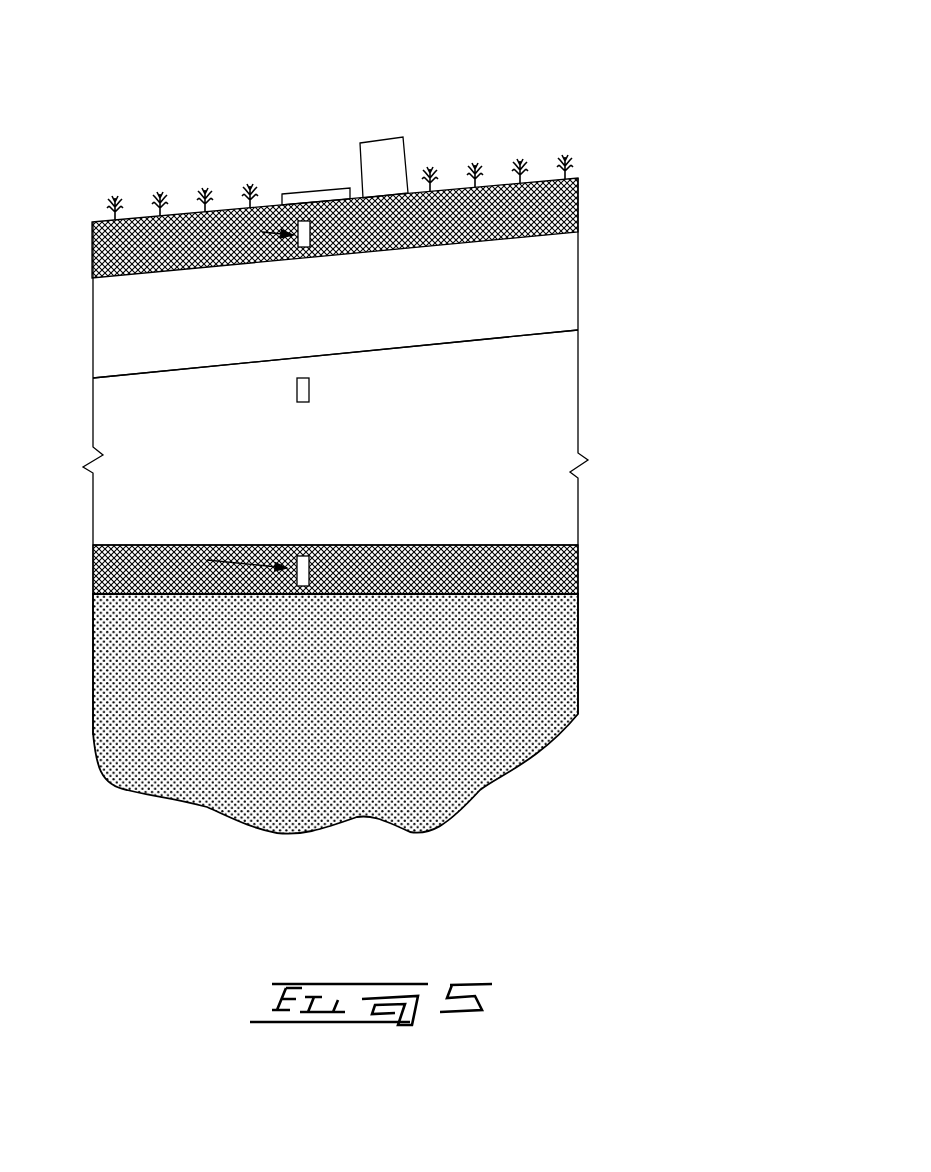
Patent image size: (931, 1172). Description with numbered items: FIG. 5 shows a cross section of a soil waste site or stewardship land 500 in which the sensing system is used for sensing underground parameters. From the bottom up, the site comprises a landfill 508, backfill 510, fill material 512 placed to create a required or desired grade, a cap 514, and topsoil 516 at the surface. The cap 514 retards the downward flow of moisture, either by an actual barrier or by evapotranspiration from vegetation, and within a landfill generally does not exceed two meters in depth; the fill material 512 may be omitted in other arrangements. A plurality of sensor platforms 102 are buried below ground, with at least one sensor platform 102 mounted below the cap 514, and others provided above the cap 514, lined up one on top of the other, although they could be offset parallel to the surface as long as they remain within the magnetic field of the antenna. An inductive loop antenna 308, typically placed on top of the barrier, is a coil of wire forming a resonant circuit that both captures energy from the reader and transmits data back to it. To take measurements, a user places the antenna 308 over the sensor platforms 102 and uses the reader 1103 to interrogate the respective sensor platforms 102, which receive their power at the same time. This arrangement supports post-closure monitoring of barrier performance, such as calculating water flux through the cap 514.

The soil waste site or stewardship land 500 is at (560, 65).
The topsoil 516 is at (582, 193).
The cap 514 is at (552, 290).
The fill material 512 is at (530, 422).
The backfill 510 is at (582, 578).
The landfill 508 is at (548, 645).
The sensor platform 102 is at (290, 398).
The inductive loop antenna 308 is at (312, 186).
The reader 1103 is at (373, 128).